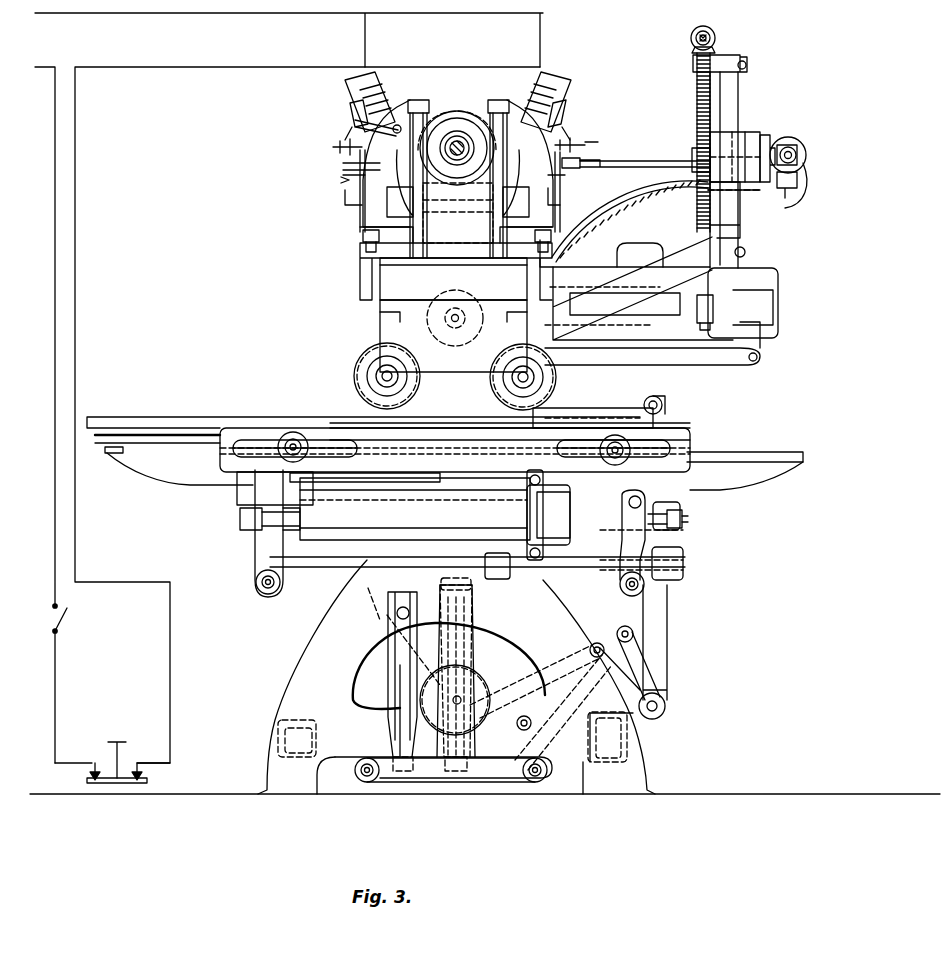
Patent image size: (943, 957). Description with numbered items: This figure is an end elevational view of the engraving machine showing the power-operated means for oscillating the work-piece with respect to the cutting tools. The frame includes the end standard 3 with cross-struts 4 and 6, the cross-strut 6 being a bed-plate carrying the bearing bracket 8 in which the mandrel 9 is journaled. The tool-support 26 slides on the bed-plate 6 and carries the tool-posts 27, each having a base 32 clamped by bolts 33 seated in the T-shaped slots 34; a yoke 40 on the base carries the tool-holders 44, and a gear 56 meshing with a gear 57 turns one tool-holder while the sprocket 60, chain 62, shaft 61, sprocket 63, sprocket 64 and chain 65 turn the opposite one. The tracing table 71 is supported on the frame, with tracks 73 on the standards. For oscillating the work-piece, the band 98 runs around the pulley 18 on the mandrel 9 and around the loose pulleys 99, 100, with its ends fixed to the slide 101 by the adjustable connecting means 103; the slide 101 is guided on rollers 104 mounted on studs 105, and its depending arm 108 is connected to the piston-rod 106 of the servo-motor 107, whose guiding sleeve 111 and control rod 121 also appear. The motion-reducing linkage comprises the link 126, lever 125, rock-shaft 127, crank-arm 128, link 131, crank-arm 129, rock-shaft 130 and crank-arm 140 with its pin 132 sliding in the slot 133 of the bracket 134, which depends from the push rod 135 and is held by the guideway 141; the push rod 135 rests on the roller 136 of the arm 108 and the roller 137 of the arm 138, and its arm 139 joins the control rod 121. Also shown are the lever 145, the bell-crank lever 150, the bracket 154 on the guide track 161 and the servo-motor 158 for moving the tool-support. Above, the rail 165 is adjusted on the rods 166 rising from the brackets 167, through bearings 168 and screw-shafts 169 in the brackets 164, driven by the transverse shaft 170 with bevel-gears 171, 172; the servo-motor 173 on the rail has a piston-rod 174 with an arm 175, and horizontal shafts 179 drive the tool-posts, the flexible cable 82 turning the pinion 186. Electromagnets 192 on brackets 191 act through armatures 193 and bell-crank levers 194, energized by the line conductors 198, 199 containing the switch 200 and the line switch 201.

The end standard 3 is at (292, 684).
The cross-strut 4 is at (305, 732).
The cross-strut 6 is at (378, 280).
The bearing bracket 8 is at (408, 218).
The mandrel 9 is at (462, 142).
The pulley 18 is at (440, 118).
The tool-support 26 is at (375, 263).
The tool-post 27 is at (365, 184).
The base 32 is at (508, 216).
The bolt 33 is at (358, 232).
The T-shaped slot 34 is at (355, 243).
The yoke 40 is at (343, 163).
The tool-holder 44 is at (463, 112).
The gear 56 is at (580, 144).
The gear 57 is at (562, 170).
The sprocket 60 is at (552, 200).
The shaft 61 is at (458, 200).
The chain 62 is at (580, 170).
The sprocket 63 is at (360, 196).
The sprocket 64 is at (355, 126).
The chain 65 is at (320, 175).
The table 71 is at (137, 417).
The track 73 is at (180, 476).
The flexible cable 82 is at (654, 230).
The band 98 is at (415, 356).
The loose pulley 99 is at (356, 368).
The loose pulley 100 is at (558, 378).
The slide 101 is at (458, 436).
The adjustable connecting means 103 is at (664, 404).
The roller 104 is at (250, 485).
The stud 105 is at (300, 460).
The piston-rod 106 is at (330, 515).
The power means 107 is at (410, 506).
The depending arm 108 is at (257, 545).
The guiding sleeve 111 is at (620, 565).
The control rod 121 is at (668, 515).
The lever 125 is at (660, 612).
The link 126 is at (634, 398).
The rock-shaft 127 is at (666, 704).
The crank-arm 128 is at (640, 666).
The crank-arm 129 is at (520, 780).
The rock-shaft 130 is at (490, 690).
The link 131 is at (565, 680).
The pin 132 is at (388, 637).
The slot 133 is at (400, 700).
The bracket 134 is at (485, 590).
The push rod 135 is at (465, 556).
The roller 136 is at (268, 592).
The roller 137 is at (628, 596).
The arm 138 is at (680, 524).
The arm 139 is at (684, 548).
The crank-arm 140 is at (520, 630).
The guideway 141 is at (522, 785).
The lever 145 is at (720, 360).
The bell-crank lever 150 is at (668, 300).
The bracket 154 is at (610, 330).
The servo-motor 158 is at (485, 335).
The guide track 161 is at (715, 312).
The bracket 164 is at (698, 70).
The rail 165 is at (750, 178).
The rod 166 is at (726, 92).
The bracket 167 is at (640, 265).
The bearing 168 is at (738, 140).
The screw-shaft 169 is at (696, 93).
The transverse shaft 170 is at (710, 32).
The bevel-gear 171 is at (695, 32).
The bevel-gear 172 is at (693, 51).
The servo-motor 173 is at (790, 137).
The piston-rod 174 is at (786, 198).
The arm 175 is at (772, 150).
The horizontal shaft 179 is at (643, 165).
The pinion 186 is at (792, 212).
The bracket 191 is at (568, 108).
The electromagnet 192 is at (357, 92).
The armature 193 is at (352, 110).
The bell-crank lever 194 is at (345, 118).
The line conductor 198 is at (303, 13).
The line conductor 199 is at (253, 66).
The switch 200 is at (108, 747).
The line switch 201 is at (71, 632).